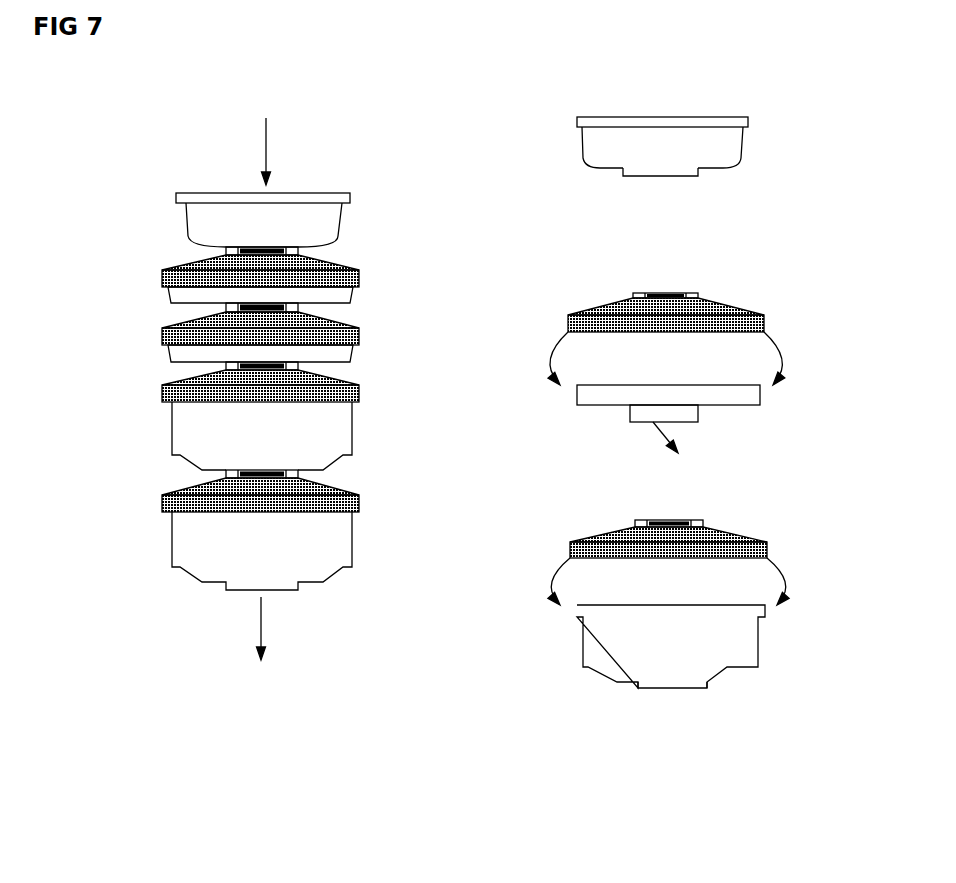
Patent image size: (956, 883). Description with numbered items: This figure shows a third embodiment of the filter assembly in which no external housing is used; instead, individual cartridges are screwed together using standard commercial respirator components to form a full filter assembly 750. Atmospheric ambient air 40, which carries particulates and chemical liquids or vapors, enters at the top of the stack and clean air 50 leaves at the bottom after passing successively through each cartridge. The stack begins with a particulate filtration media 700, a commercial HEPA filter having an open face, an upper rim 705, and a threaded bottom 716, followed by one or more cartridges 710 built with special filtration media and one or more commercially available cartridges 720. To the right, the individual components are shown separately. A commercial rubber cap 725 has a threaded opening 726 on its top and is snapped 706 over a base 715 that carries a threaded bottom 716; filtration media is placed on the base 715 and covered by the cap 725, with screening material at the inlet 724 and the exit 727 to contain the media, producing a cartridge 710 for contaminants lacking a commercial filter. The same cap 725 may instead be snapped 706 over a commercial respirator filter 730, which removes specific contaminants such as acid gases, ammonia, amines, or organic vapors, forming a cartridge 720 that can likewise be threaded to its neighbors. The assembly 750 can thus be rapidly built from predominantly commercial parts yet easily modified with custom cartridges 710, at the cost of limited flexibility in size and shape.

The atmospheric ambient air 40 is at (264, 139).
The clean air 50 is at (259, 647).
The particulate filtration media 700 is at (186, 220).
The rim 705 is at (753, 122).
The snapped connection 706 is at (668, 468).
The cartridge constructed with special filtration media 710 is at (170, 295).
The base 715 is at (750, 403).
The threaded bottom 716 is at (688, 176).
The commercially available cartridge 720 is at (170, 417).
The inlet 724 is at (660, 279).
The rubber cap 725 is at (592, 308).
The threaded opening 726 is at (698, 297).
The exit 727 is at (685, 452).
The commercial respirator filter 730 is at (583, 647).
The full filter assembly 750 is at (168, 180).